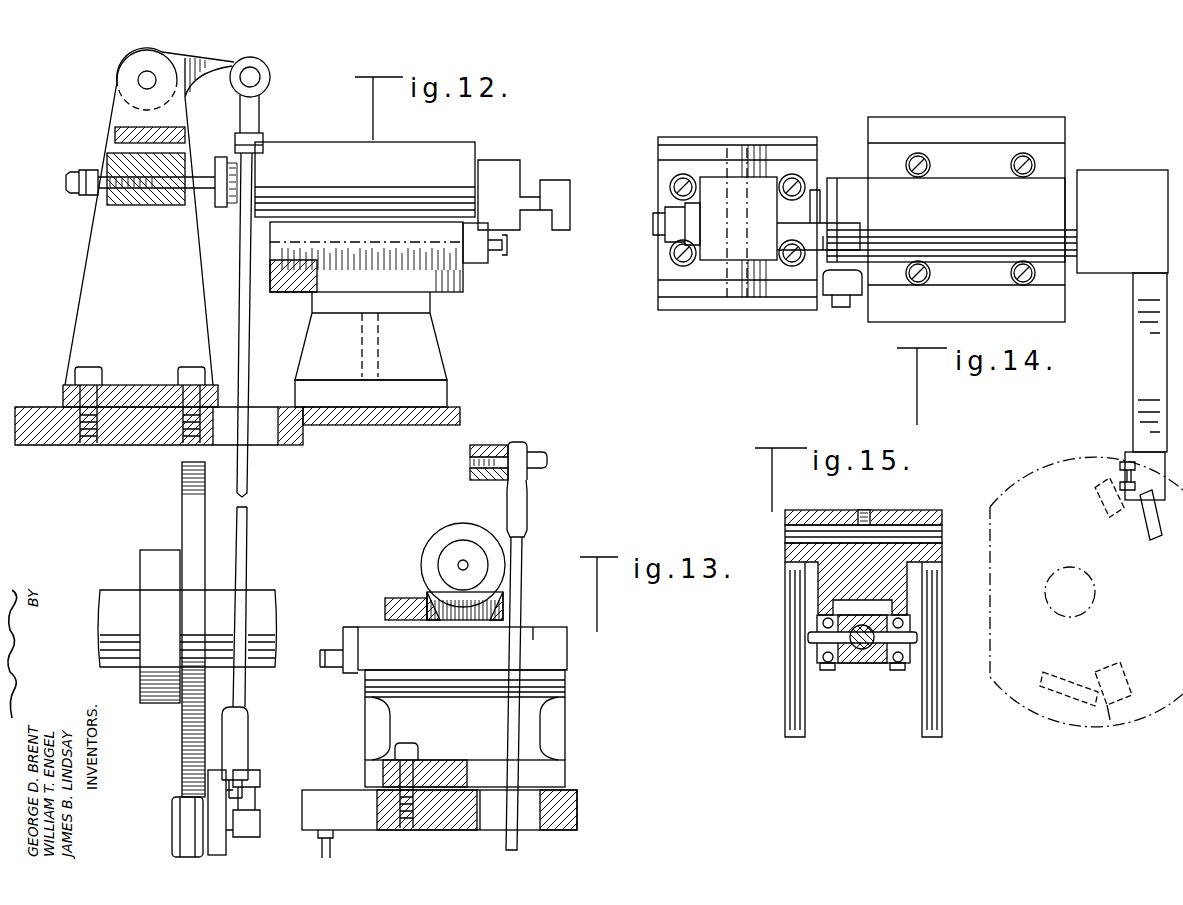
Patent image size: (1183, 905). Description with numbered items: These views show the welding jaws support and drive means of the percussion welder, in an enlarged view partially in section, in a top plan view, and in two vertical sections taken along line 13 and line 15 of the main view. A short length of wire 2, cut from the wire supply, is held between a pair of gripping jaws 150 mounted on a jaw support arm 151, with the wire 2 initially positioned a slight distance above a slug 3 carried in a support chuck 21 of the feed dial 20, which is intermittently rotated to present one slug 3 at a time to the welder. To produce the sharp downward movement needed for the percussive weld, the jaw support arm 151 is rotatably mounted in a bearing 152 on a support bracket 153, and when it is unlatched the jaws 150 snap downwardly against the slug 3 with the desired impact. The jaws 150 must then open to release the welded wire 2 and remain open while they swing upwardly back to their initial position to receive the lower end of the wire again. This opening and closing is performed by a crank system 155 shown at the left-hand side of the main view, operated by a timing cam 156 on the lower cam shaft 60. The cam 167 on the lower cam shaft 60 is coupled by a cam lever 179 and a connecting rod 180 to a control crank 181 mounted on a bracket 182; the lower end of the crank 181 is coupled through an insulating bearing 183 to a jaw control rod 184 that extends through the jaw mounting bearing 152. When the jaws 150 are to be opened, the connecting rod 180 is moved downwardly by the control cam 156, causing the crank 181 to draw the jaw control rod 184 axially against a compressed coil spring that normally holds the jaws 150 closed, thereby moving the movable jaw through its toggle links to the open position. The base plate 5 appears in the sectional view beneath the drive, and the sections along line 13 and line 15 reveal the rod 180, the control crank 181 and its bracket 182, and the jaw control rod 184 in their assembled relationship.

In FIG. 14, the wire length 2 is at (1120, 478).
In FIG. 14, the slug 3 is at (1108, 705).
In FIG. 13, the base plate 5 is at (578, 807).
In FIG. 12, the section line 13— 13 is at (248, 42).
In FIG. 12, the section line 15— 15 is at (150, 47).
In FIG. 14, the feed dial 20 is at (1018, 468).
In FIG. 14, the support chuck 21 is at (1096, 508).
In FIG. 12, the lower cam shaft 60 is at (270, 611).
In FIG. 12, the gripping jaws 150 is at (570, 195).
In FIG. 14, the gripping jaws 150 is at (1146, 512).
In FIG. 12, the jaw support arm 151 is at (518, 162).
In FIG. 14, the jaw support arm 151 is at (1118, 258).
In FIG. 12, the bearing 152 is at (395, 178).
In FIG. 14, the bearing 152 is at (1055, 200).
In FIG. 13, the support bracket 153 is at (497, 557).
In FIG. 14, the support bracket 153 is at (963, 160).
In FIG. 12, the crank system 155 is at (103, 118).
In FIG. 12, the timing cam 156 is at (183, 522).
In FIG. 12, the cam 167 is at (192, 560).
In FIG. 12, the cam lever 179 is at (240, 803).
In FIG. 12, the connecting rod 180 is at (248, 327).
In FIG. 13, the connecting rod 180 is at (513, 595).
In FIG. 14, the connecting rod 180 is at (858, 284).
In FIG. 12, the control crank 181 is at (260, 104).
In FIG. 13, the control crank 181 is at (478, 445).
In FIG. 14, the control crank 181 is at (770, 183).
In FIG. 15, the control crank 181 is at (870, 543).
In FIG. 12, the bracket 182 is at (93, 262).
In FIG. 15, the bracket 182 is at (787, 688).
In FIG. 12, the insulating bearing 183 is at (103, 160).
In FIG. 12, the jaw control rod 184 is at (186, 150).
In FIG. 13, the jaw control rod 184 is at (460, 563).
In FIG. 15, the jaw control rod 184 is at (860, 645).